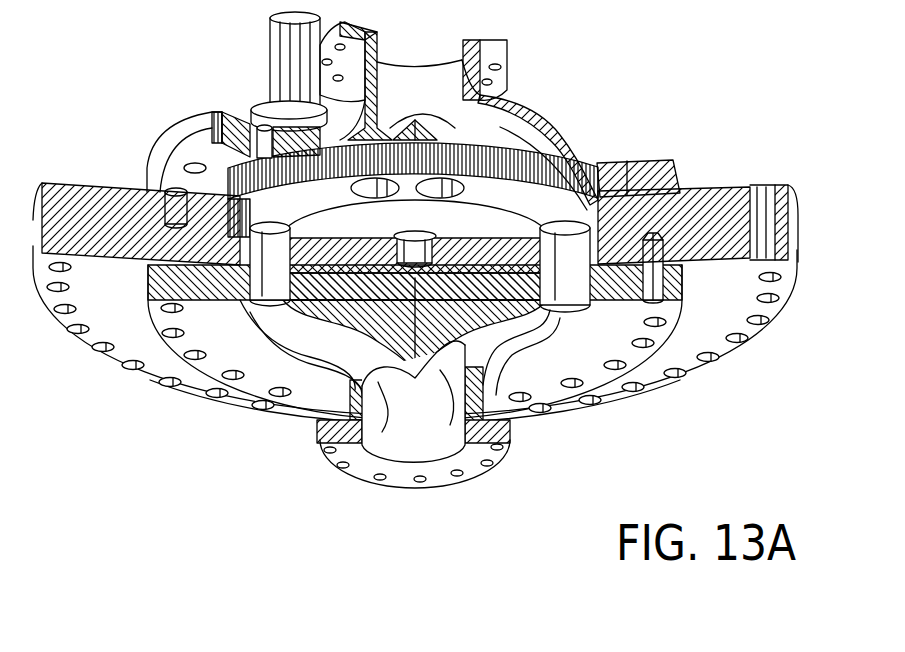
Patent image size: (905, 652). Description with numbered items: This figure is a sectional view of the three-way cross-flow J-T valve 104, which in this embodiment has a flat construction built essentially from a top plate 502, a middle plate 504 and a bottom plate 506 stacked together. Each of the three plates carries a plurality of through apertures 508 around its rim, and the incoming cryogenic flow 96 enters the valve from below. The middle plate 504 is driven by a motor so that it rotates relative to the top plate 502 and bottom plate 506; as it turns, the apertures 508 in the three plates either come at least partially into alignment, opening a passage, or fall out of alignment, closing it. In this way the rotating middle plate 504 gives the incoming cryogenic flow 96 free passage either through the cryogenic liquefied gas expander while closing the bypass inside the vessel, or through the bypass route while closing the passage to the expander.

The three-way cross-flow J-T valve 104 is at (415, 217).
The top plate 502 is at (652, 160).
The middle plate 504 is at (625, 190).
The bottom plate 506 is at (196, 358).
The through apertures 508 is at (676, 378).
The incoming cryogenic flow 96 is at (413, 450).